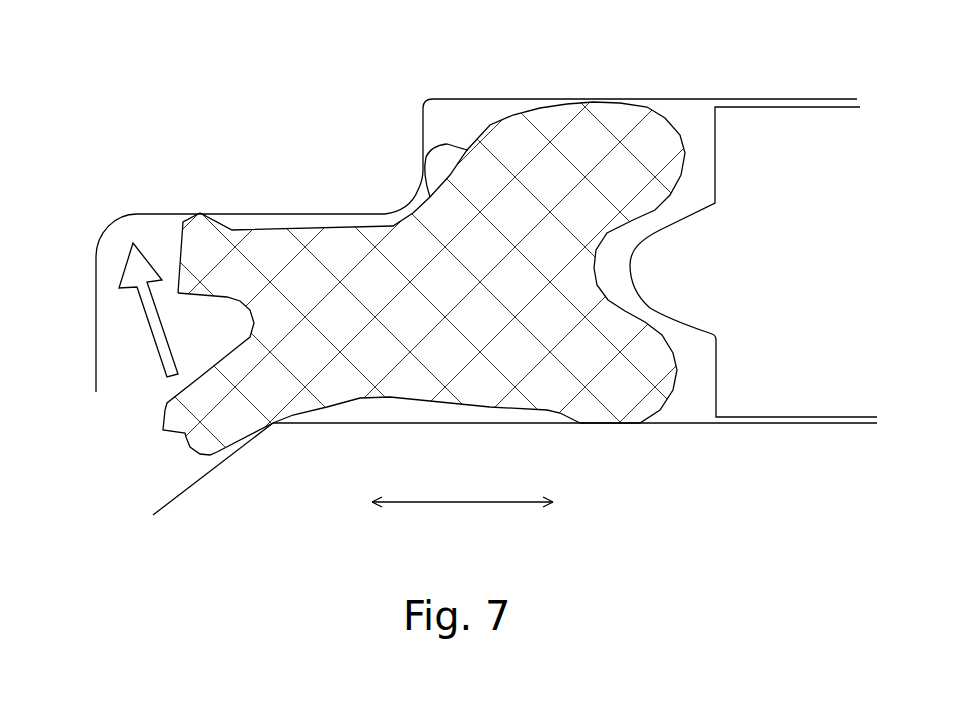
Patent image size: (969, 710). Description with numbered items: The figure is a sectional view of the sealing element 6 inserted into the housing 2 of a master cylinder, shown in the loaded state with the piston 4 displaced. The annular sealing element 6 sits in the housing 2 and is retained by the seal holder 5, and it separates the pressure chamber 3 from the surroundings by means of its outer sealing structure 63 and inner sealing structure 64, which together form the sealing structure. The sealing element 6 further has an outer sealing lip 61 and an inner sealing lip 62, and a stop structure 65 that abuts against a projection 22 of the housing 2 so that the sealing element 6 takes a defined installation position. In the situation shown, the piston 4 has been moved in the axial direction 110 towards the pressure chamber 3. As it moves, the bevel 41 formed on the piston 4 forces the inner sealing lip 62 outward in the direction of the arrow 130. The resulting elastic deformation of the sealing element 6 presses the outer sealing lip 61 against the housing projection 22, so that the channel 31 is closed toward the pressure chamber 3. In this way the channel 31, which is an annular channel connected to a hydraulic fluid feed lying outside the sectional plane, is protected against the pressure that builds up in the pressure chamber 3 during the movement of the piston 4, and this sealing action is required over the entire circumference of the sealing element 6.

The housing 2 is at (90, 234).
The pressure chamber 3 is at (175, 469).
The piston 4 is at (257, 494).
The seal holder 5 is at (765, 265).
The sealing element 6 is at (484, 355).
The projection 22 is at (374, 177).
The channel 31 is at (292, 214).
The bevel 41 is at (168, 504).
The outer sealing lip 61 is at (207, 213).
The inner sealing lip 62 is at (164, 413).
The outer sealing structure 63 is at (668, 120).
The inner sealing structure 64 is at (677, 366).
The stop structure 65 is at (421, 164).
The axial direction 110 is at (473, 502).
The arrow 130 is at (148, 333).